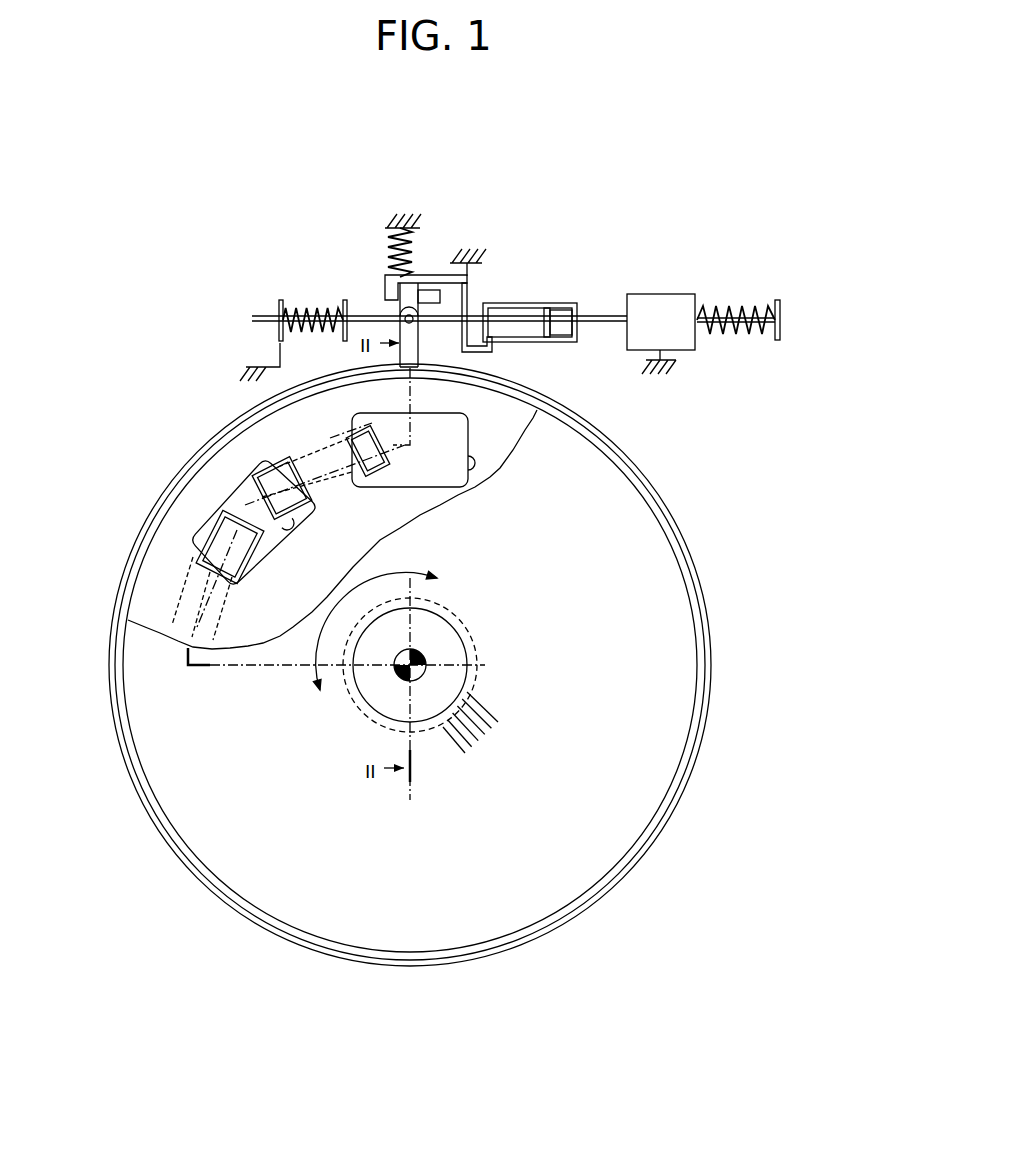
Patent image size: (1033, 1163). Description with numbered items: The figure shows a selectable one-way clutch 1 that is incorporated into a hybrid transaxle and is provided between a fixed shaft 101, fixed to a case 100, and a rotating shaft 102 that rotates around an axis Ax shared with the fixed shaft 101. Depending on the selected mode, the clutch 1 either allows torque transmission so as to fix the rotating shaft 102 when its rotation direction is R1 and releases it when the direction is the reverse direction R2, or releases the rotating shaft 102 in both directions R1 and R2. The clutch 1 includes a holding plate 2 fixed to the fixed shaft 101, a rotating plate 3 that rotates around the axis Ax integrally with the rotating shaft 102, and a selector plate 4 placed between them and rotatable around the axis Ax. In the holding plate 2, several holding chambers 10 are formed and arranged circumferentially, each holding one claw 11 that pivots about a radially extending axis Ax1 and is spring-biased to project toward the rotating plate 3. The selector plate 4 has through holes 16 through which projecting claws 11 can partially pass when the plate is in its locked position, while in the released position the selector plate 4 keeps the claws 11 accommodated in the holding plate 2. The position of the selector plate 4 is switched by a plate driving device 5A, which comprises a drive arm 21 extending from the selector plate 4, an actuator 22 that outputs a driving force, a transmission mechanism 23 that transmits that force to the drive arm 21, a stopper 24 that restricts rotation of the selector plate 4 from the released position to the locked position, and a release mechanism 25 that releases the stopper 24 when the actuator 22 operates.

The selectable one-way clutch 1 is at (451, 119).
The holding plate 2 is at (193, 537).
The rotating plate 3 is at (123, 693).
The selector plate 4 is at (132, 559).
The plate driving device 5A is at (566, 262).
The holding chamber 10 is at (283, 517).
The claw 11 is at (278, 477).
The through hole 16 is at (462, 460).
The drive arm 21 is at (403, 312).
The actuator 22 is at (676, 289).
The transmission mechanism 23 is at (456, 309).
The stopper 24 is at (425, 271).
The release mechanism 25 is at (532, 351).
The case 100 is at (388, 240).
The fixed shaft 101 is at (480, 677).
The rotating shaft 102 is at (460, 652).
The axis Ax is at (420, 654).
The axis Ax1 is at (188, 514).
The rotation direction R1 is at (393, 622).
The rotation direction R2 is at (307, 698).